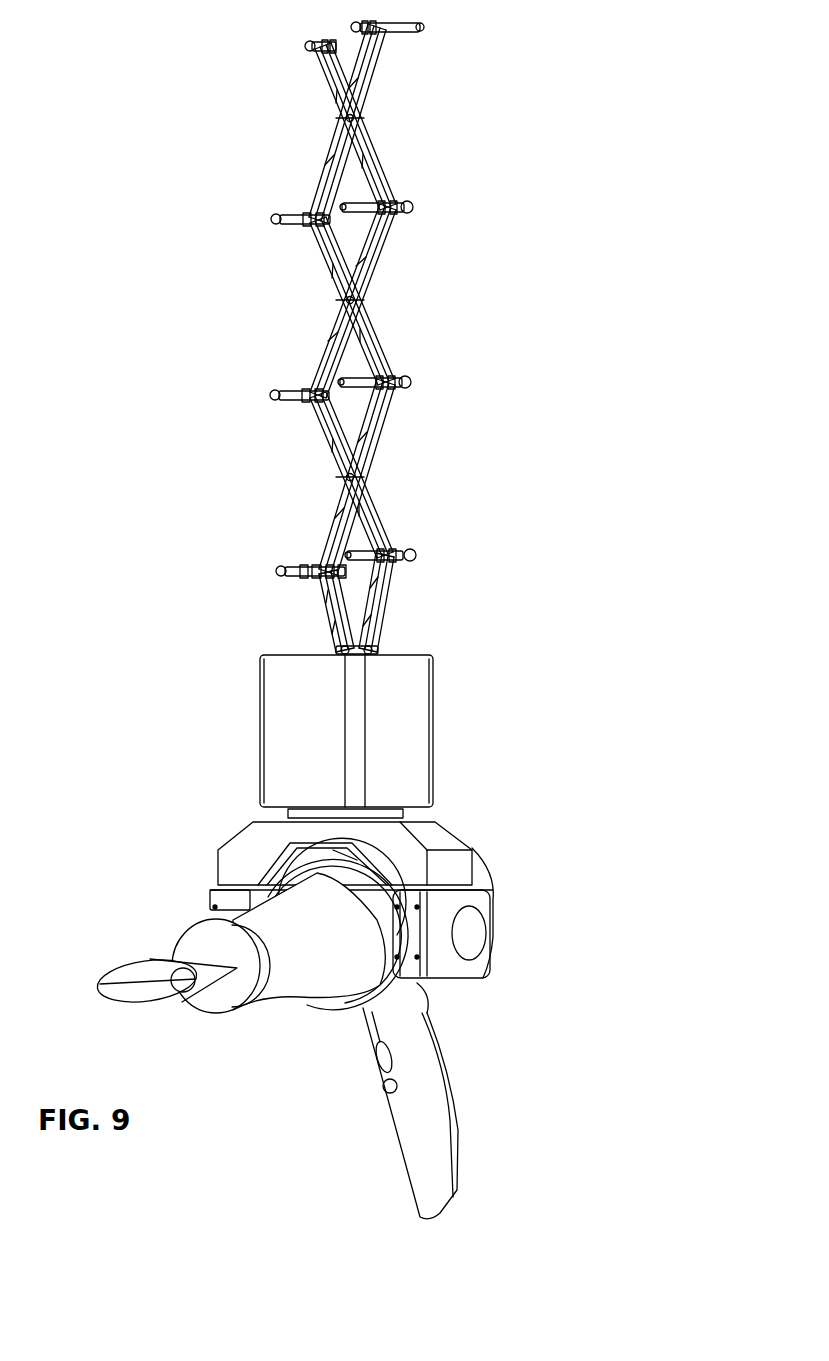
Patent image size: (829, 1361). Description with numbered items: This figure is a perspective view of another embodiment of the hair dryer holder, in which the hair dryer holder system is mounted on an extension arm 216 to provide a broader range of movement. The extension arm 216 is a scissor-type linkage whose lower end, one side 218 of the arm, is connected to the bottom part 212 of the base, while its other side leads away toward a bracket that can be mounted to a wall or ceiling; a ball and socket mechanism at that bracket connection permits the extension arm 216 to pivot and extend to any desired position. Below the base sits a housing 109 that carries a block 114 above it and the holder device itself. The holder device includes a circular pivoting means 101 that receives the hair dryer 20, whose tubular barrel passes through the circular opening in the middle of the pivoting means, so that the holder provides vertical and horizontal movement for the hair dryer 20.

The extension arm 216 is at (368, 515).
The side of the extension arm 218 is at (320, 602).
The bottom part of the base 212 is at (378, 653).
The battery pack 114 is at (412, 745).
The housing 109 is at (240, 843).
The circular pivoting means 101 is at (360, 1008).
The hair dryer 20 is at (453, 1120).